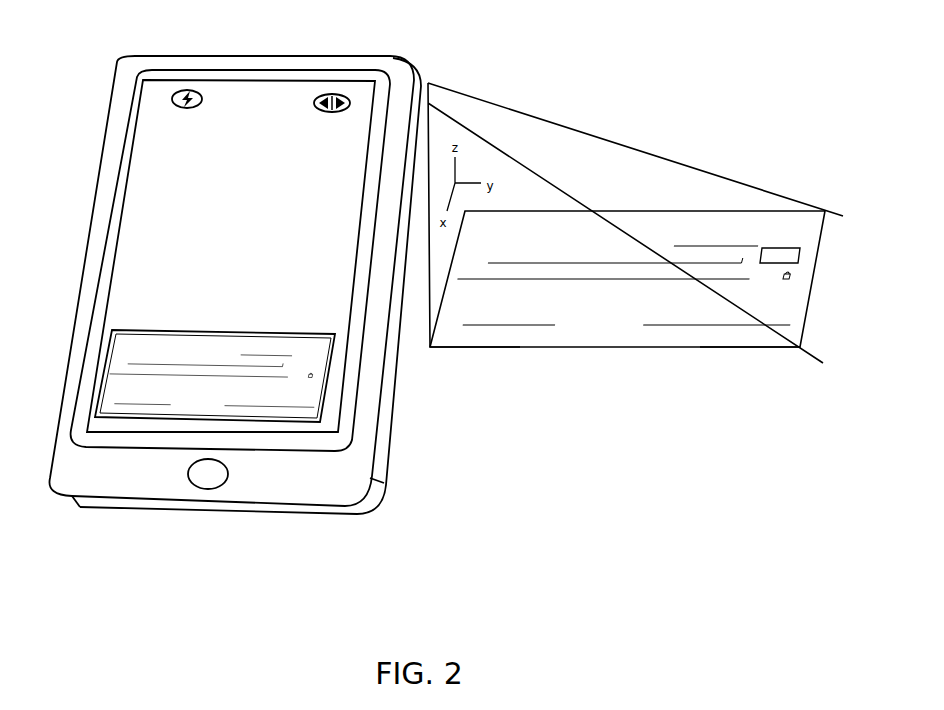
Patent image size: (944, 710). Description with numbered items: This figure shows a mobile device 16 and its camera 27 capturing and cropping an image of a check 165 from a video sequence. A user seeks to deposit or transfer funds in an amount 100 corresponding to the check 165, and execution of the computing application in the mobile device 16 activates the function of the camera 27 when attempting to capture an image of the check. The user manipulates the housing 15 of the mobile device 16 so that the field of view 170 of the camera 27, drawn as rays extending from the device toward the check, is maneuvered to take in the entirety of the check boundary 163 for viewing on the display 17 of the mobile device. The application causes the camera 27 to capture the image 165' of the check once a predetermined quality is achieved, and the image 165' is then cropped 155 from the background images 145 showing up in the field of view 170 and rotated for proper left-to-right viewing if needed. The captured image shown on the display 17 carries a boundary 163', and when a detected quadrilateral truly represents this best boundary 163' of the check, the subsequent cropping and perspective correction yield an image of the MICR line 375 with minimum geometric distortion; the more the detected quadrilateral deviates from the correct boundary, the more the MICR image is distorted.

The housing 15 is at (388, 412).
The mobile device 16 is at (266, 55).
The display 17 is at (297, 278).
The camera 27 is at (245, 107).
The background images 145 is at (158, 233).
The cropping 155 is at (98, 411).
The boundary of the check image 163' is at (214, 360).
The image of the check 165' is at (174, 376).
The field of view 170 is at (620, 143).
The amount 100 is at (782, 247).
The check boundary 163 is at (627, 302).
The check 165 is at (760, 384).
The MICR line 375 is at (446, 347).